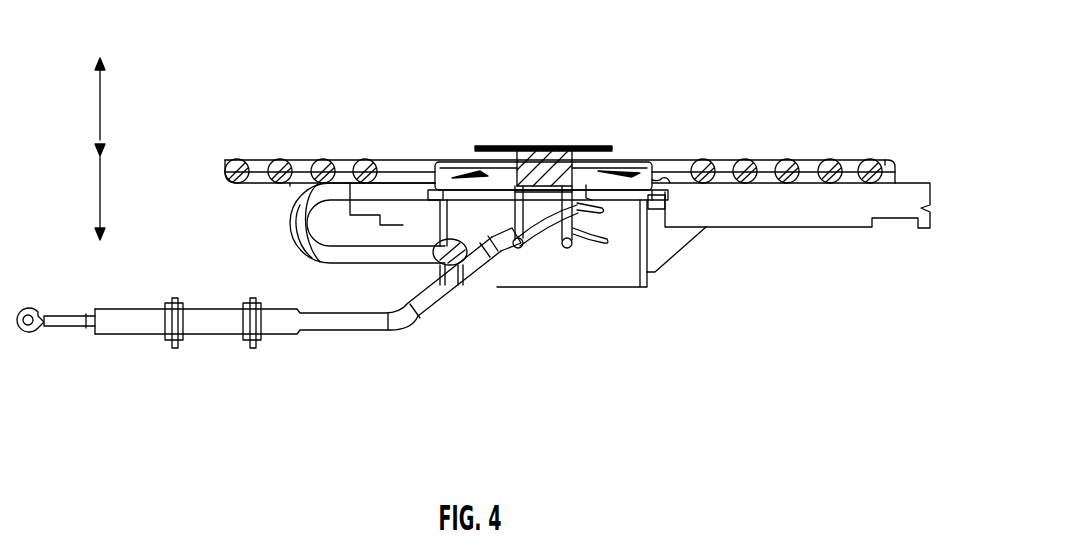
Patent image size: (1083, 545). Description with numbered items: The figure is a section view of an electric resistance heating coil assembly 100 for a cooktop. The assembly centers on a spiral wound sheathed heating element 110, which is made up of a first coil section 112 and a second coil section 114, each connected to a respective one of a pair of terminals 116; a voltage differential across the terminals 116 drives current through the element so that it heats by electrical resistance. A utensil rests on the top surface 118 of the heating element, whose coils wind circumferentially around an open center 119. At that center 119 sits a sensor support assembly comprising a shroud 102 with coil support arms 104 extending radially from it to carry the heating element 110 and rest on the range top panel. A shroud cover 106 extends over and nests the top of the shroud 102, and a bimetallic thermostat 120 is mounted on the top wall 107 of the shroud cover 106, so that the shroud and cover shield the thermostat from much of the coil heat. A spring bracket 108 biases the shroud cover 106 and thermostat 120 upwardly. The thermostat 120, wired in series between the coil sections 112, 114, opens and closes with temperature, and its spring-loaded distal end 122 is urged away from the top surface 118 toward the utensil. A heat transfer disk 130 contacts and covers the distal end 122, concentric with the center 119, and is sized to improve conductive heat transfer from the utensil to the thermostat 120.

The electric resistance heating coil assembly 100 is at (872, 66).
The shroud 102 is at (574, 274).
The coil support arms 104 is at (370, 192).
The shroud cover 106 is at (668, 195).
The top wall 107 is at (638, 160).
The spring bracket 108 is at (462, 182).
The spiral wound sheathed heating element 110 is at (872, 168).
The first coil section 112 is at (322, 327).
The second coil section 114 is at (292, 208).
The terminals 116 is at (63, 324).
The top surface 118 is at (244, 156).
The center 119 is at (403, 180).
The bimetallic thermostat 120 is at (548, 160).
The distal end 122 is at (506, 150).
The heat transfer disk 130 is at (588, 146).